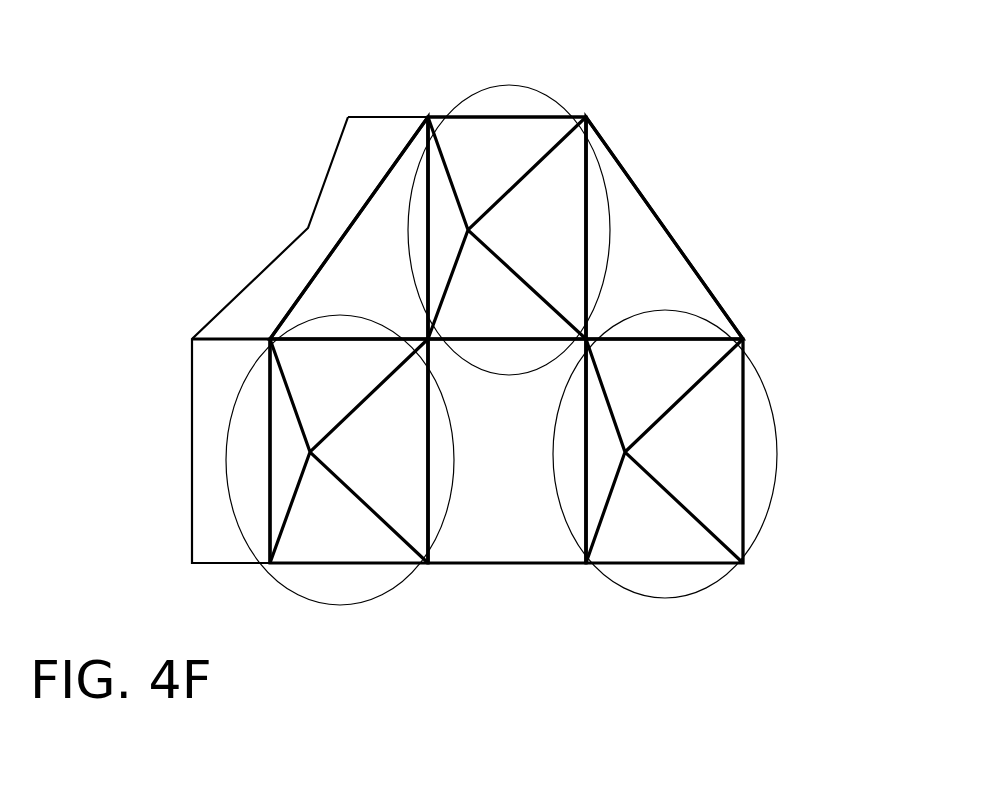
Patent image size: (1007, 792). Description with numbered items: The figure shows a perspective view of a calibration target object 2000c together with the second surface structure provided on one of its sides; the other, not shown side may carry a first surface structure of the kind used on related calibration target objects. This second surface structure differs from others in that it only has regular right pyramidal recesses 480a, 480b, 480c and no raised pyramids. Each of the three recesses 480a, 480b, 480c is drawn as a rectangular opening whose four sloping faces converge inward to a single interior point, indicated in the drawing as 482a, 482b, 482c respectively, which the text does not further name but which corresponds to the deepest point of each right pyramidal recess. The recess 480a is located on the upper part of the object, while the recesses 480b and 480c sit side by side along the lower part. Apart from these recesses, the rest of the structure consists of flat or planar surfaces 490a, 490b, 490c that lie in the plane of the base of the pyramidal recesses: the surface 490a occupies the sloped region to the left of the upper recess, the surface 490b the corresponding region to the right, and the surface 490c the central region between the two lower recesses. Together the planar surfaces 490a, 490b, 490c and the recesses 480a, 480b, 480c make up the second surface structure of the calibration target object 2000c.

The calibration target object 2000c is at (165, 140).
The regular right pyramidal recess 480a is at (557, 100).
The regular right pyramidal recess 480b is at (263, 567).
The regular right pyramidal recess 480c is at (775, 425).
The first panel fold apex 482a is at (468, 233).
The second panel fold apex 482b is at (310, 455).
The third panel fold apex 482c is at (625, 455).
The flat or planar surface 490a is at (387, 306).
The flat or planar surface 490b is at (662, 295).
The flat or planar surface 490c is at (522, 460).